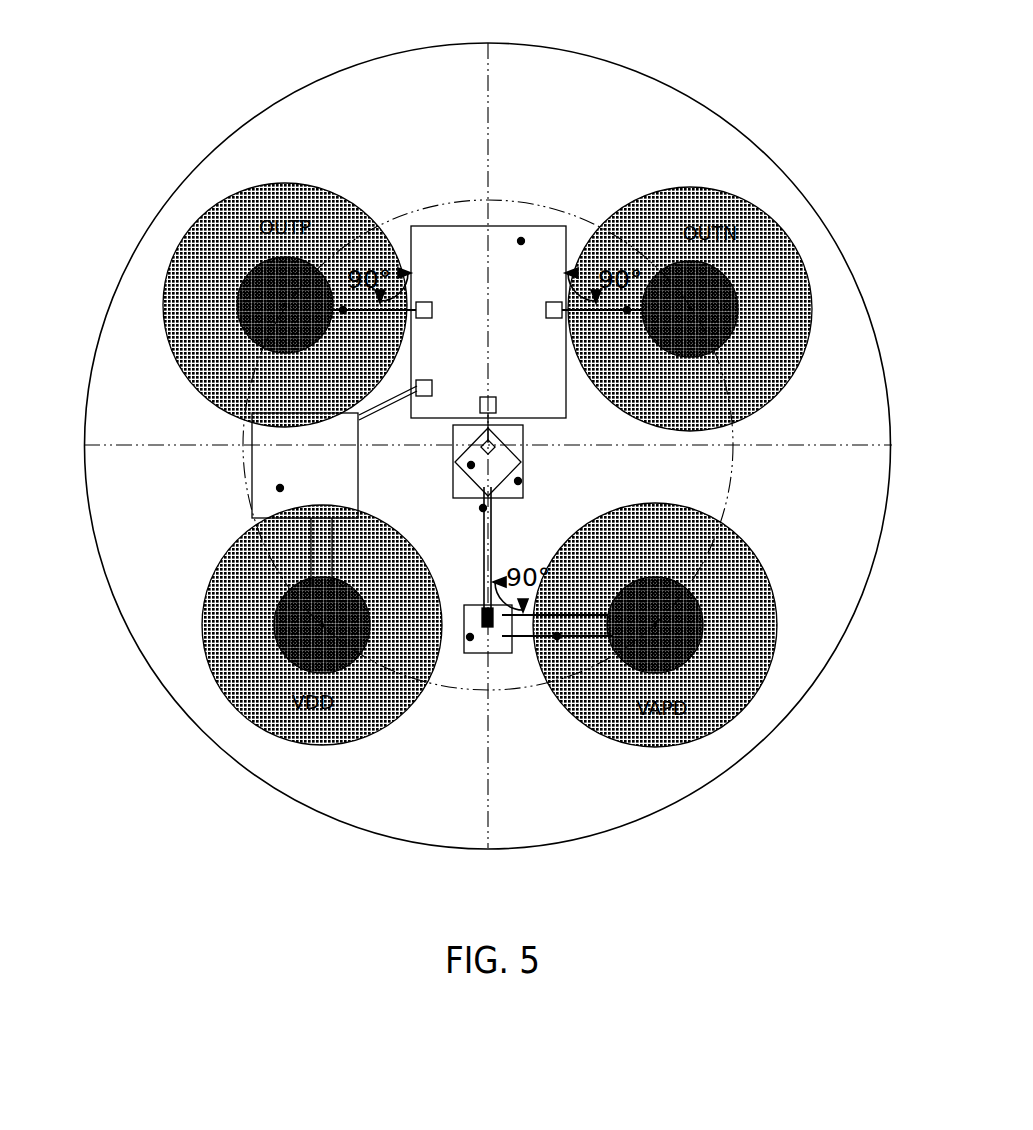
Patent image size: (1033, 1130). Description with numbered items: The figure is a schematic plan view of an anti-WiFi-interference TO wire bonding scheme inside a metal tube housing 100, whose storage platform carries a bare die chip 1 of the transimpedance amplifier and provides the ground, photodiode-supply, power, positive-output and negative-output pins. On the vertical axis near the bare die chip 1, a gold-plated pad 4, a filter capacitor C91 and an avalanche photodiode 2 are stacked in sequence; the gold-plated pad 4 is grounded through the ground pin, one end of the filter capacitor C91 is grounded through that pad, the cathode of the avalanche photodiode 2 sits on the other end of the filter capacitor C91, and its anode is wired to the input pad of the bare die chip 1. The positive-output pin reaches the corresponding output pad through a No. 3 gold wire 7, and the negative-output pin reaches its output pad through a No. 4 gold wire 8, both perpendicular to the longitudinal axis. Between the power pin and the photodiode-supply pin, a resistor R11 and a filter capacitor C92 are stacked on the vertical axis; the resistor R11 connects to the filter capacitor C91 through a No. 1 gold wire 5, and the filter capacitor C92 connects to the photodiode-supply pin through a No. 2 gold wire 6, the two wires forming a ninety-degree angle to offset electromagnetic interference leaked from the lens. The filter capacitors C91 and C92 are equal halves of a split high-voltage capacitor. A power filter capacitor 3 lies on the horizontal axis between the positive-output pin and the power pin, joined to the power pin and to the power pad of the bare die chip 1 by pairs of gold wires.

The metal tube housing 100 is at (488, 446).
The bare DIE chip 1 is at (520, 215).
The avalanche photodiode APD 2 is at (530, 462).
The power filter capacitor 3 is at (275, 590).
The gold-plated pad 4 is at (560, 501).
The No. 1 gold wire 5 is at (457, 547).
The No. 2 gold wire 6 is at (594, 749).
The No. 3 gold wire 7 is at (383, 163).
The No. 4 gold wire 8 is at (639, 163).
The filter capacitor C91 is at (453, 495).
The filter capacitor C92 is at (422, 691).
The resistor R11 is at (412, 753).